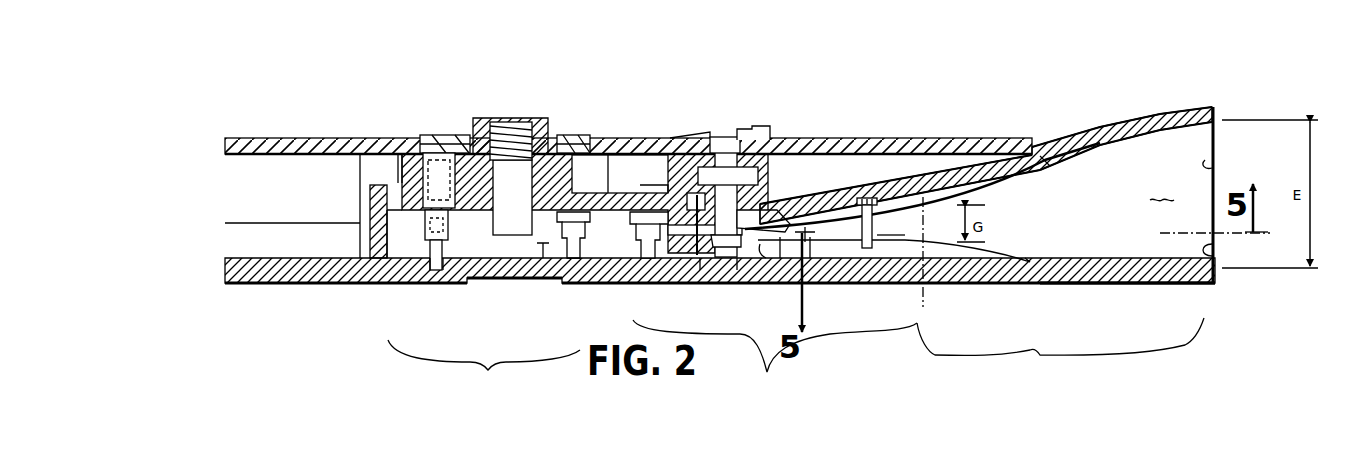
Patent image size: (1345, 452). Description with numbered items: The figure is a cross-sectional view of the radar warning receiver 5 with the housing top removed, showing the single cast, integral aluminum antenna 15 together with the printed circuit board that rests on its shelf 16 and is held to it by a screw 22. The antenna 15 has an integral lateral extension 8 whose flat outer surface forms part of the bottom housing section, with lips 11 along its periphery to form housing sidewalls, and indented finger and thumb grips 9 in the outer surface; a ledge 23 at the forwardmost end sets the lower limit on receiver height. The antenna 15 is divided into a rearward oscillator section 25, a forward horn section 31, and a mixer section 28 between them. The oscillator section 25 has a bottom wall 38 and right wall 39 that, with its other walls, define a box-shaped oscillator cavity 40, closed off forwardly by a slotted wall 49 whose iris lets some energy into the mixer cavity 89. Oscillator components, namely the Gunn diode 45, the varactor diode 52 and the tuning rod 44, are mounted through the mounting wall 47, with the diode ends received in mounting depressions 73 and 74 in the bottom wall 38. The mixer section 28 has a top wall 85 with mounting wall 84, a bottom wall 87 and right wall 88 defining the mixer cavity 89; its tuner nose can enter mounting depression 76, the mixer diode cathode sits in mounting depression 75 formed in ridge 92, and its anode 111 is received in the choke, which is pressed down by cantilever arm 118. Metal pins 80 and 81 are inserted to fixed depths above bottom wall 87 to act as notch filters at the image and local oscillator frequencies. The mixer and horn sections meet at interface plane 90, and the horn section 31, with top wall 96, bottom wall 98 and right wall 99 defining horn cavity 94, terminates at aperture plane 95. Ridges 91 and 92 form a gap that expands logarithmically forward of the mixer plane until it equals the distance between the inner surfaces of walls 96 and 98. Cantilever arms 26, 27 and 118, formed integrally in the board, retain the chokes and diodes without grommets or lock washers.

The radar warning receiver 5 is at (255, 322).
The lateral extension 8 is at (253, 257).
The finger and thumb grips 9 is at (497, 283).
The lips 11 is at (272, 236).
The antenna 15 is at (350, 316).
The shelf 16 is at (1047, 160).
The screw 22 is at (760, 128).
The ledge 23 is at (1207, 107).
The oscillator section 25 is at (489, 372).
The cantilever arm 26 is at (423, 135).
The cantilever arm 27 is at (583, 133).
The mixer section 28 is at (768, 377).
The horn section 31 is at (1060, 353).
The bottom wall 38 is at (455, 283).
The right wall 39 is at (543, 258).
The oscillator cavity 40 is at (479, 246).
The tuning rod 44 is at (513, 178).
The Gunn diode 45 is at (420, 250).
The mounting wall 47 is at (578, 174).
The forward slotted wall 49 is at (630, 250).
The varactor diode 52 is at (594, 250).
The mounting depression 73 is at (423, 283).
The mounting depression 74 is at (575, 250).
The mounting depression 75 is at (737, 266).
The mounting depression 76 is at (693, 258).
The metal pin 80 is at (878, 232).
The metal pin 81 is at (811, 258).
The mounting wall 84 is at (787, 204).
The top wall 85 is at (819, 188).
The bottom wall 87 is at (701, 262).
The right wall 88 is at (851, 230).
The mixer cavity 89 is at (772, 262).
The interface plane 90 is at (925, 308).
The ridge 91 is at (1012, 177).
The ridge 92 is at (1027, 253).
The horn cavity 94 is at (1162, 191).
The aperture plane 95 is at (1212, 256).
The top wall 96 is at (1121, 121).
The bottom wall 98 is at (1101, 284).
The right wall 99 is at (1212, 166).
The anode 111 is at (772, 216).
The cantilever arm 118 is at (716, 132).